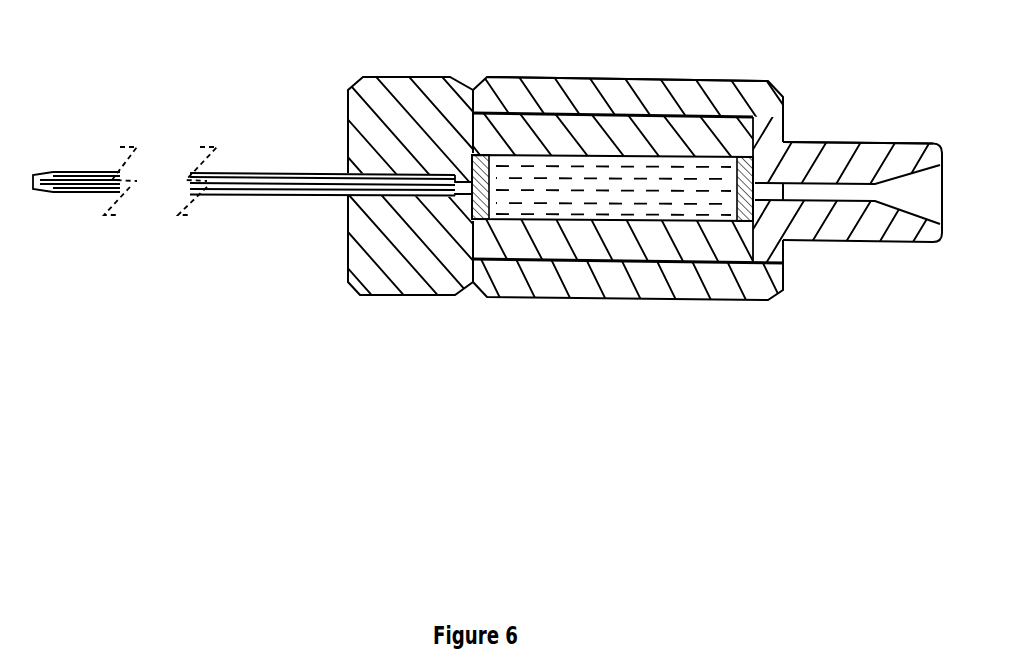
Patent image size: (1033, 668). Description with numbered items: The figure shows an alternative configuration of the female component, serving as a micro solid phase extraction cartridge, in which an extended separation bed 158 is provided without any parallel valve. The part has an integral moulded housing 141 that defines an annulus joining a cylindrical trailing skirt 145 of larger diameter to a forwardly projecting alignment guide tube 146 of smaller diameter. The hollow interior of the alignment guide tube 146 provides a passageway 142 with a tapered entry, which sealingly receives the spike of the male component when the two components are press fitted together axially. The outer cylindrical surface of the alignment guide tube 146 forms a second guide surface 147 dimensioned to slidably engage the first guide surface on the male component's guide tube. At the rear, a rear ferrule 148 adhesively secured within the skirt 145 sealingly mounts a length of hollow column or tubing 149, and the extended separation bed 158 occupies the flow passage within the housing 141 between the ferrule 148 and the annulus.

The housing 141 is at (743, 301).
The passageway 142 is at (850, 196).
The trailing skirt 145 is at (633, 86).
The alignment guide tube 146 is at (893, 246).
The second guide surface 147 is at (872, 142).
The rear ferrule 148 is at (422, 283).
The hollow column or tubing 149 is at (295, 197).
The extended separation bed 158 is at (623, 208).